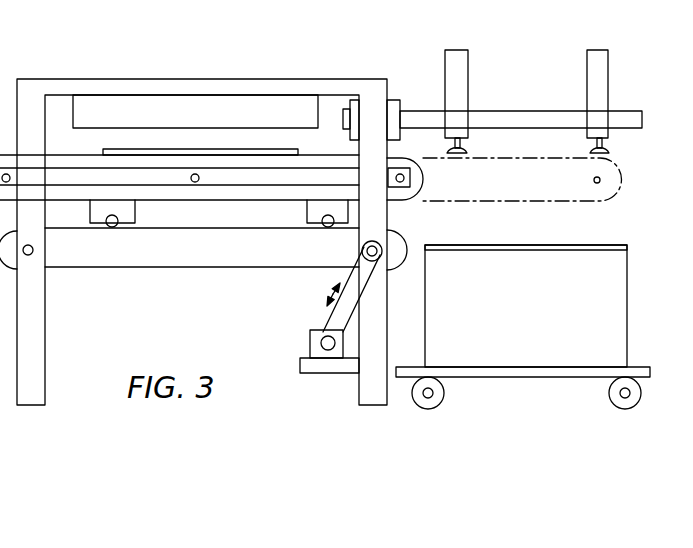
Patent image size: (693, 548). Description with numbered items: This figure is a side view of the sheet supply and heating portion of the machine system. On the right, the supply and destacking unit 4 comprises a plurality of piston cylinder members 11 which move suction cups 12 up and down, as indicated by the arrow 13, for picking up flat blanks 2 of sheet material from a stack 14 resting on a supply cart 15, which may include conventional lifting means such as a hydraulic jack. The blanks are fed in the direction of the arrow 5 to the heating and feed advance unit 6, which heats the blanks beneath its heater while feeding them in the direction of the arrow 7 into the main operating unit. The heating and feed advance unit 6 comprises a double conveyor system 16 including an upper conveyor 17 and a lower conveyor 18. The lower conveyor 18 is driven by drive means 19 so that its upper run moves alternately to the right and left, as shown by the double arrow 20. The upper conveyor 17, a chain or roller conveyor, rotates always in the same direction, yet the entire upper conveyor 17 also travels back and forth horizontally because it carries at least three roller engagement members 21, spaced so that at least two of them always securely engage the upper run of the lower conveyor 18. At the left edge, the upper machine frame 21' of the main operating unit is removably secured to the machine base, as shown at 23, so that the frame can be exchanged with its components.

The flat blank 2 is at (287, 152).
The supply and destacking unit 4 is at (640, 82).
The arrow 5 is at (503, 143).
The heating and feed advance unit 6 is at (227, 56).
The arrow 7 is at (93, 146).
The piston cylinder members 11 is at (464, 73).
The suction cups 12 is at (467, 152).
The arrow 13 is at (531, 69).
The stack 14 is at (617, 276).
The supply cart 15 is at (517, 373).
The double conveyor system 16 is at (89, 299).
The upper conveyor 17 is at (200, 193).
The lower conveyor 18 is at (250, 262).
The drive means 19 is at (310, 342).
The double arrow 20 is at (197, 311).
The roller engagement members 21 is at (219, 213).
The upper machine frame 21' is at (15, 16).
The removable securing 23 is at (0, 100).